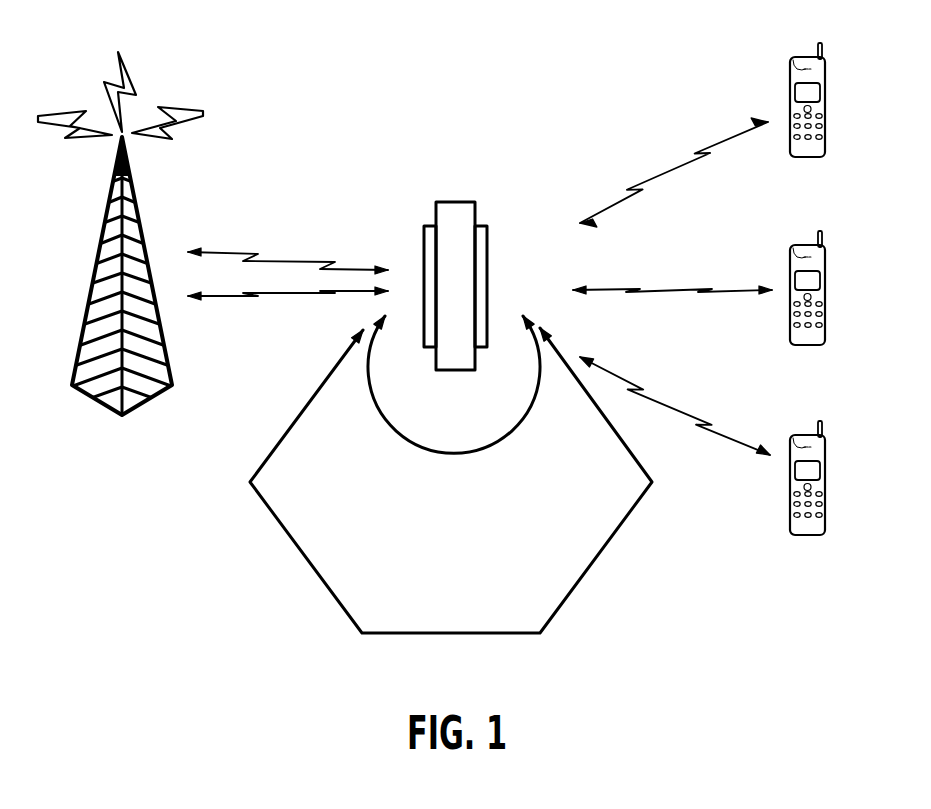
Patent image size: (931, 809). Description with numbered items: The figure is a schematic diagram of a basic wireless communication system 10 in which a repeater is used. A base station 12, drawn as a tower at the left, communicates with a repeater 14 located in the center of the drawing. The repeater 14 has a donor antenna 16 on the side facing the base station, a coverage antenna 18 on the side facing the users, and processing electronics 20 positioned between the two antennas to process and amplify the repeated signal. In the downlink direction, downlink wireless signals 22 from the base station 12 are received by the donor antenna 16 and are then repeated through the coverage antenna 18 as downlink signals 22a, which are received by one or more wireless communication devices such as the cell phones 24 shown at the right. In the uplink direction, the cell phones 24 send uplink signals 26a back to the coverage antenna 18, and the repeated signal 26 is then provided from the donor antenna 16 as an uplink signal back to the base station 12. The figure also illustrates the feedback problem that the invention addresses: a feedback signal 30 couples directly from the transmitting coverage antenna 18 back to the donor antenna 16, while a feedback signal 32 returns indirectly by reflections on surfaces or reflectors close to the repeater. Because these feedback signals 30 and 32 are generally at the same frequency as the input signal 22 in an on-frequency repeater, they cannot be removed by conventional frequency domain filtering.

The wireless communication system 10 is at (549, 68).
The base station 12 is at (138, 198).
The repeater 14 is at (475, 125).
The donor antenna 16 is at (424, 240).
The coverage antenna 18 is at (488, 275).
The processing electronics 20 is at (477, 194).
The downlink wireless signals 22 is at (297, 262).
The downlink signals 22a is at (690, 163).
The cell phones 24 is at (826, 101).
The repeated signal 26 is at (288, 298).
The uplink signals 26a is at (660, 291).
The feedback signal 30 is at (432, 452).
The feedback signal 32 is at (303, 558).